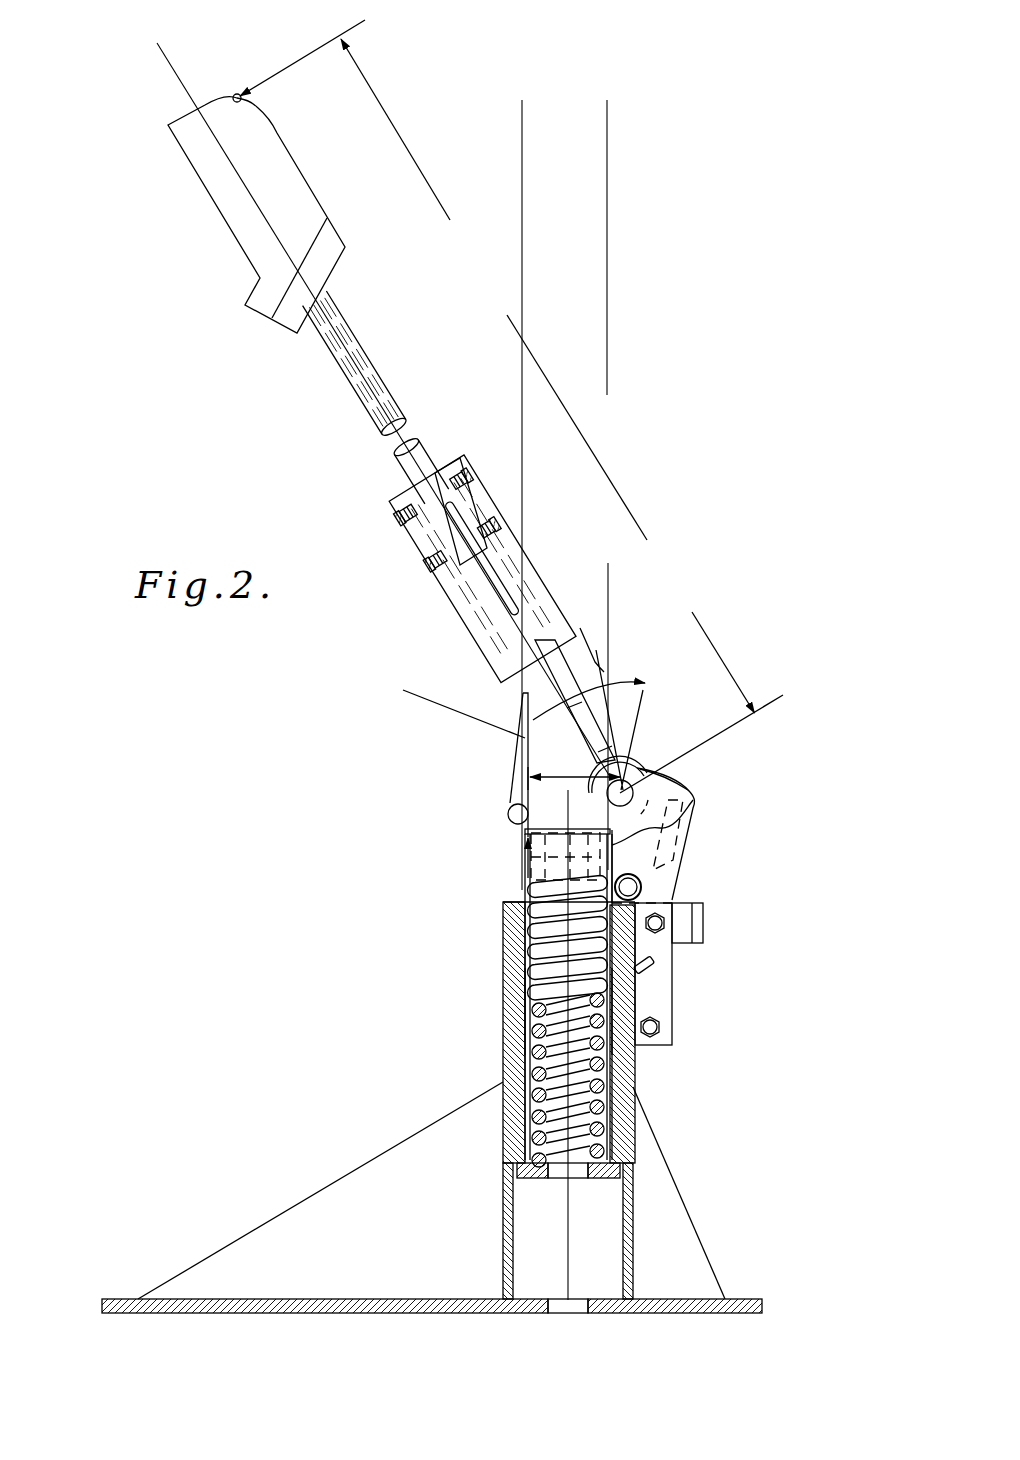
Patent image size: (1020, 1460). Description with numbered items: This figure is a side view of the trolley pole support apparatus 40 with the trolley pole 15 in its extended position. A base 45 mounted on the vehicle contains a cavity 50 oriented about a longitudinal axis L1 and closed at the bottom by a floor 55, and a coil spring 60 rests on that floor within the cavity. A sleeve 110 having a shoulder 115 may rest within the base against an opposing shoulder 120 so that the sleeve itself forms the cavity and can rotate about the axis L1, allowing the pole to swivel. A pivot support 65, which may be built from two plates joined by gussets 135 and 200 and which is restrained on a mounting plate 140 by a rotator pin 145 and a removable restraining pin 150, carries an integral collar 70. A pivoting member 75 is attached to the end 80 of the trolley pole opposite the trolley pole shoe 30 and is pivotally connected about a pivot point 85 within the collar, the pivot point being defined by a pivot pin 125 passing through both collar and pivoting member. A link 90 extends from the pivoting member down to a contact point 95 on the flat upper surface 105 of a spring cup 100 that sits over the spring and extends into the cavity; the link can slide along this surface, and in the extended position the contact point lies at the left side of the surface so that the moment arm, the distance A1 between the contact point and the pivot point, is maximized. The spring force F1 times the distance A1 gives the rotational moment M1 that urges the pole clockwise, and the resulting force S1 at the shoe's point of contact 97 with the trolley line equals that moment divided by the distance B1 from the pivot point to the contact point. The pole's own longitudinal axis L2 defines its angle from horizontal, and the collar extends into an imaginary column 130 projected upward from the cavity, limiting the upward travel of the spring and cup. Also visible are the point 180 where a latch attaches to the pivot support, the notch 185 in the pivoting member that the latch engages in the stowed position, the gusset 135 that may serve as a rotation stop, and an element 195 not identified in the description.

The trolley pole 15 is at (387, 490).
The trolley pole shoe 30 is at (227, 203).
The trolley pole support apparatus 40 is at (748, 632).
The base 45 is at (337, 1233).
The cavity 50 is at (527, 1108).
The floor 55 is at (527, 1160).
The coil spring 60 is at (605, 1128).
The pivot support 65 is at (692, 798).
The collar 70 is at (620, 840).
The pivoting member 75 is at (598, 645).
The end of the trolley pole 80 is at (447, 453).
The pivot point 85 is at (632, 768).
The link 90 is at (510, 770).
The contact point 95 is at (508, 805).
The point of contact of the shoe 97 is at (248, 101).
The spring cup 100 is at (522, 877).
The flat upper surface 105 is at (487, 776).
The sleeve 110 is at (508, 928).
The shoulder 115 is at (525, 1003).
The opposing shoulder 120 is at (528, 968).
The pivot pin 125 is at (687, 793).
The imaginary column 130 is at (607, 150).
The gusset 135 is at (690, 832).
The mounting plate 140 is at (685, 930).
The rotator pin 145 is at (662, 1027).
The restraining pin 150 is at (665, 922).
The point 180 is at (640, 887).
The notch 185 is at (600, 650).
The slot 195 is at (655, 968).
The gusset 200 is at (650, 860).
The longitudinal axis L1 is at (568, 1240).
The longitudinal axis L2 is at (168, 63).
The force S1 is at (285, 63).
The distance B1 is at (496, 495).
The distance A1 is at (442, 708).
The rotational moment M1 is at (617, 673).
The force F1 is at (524, 852).